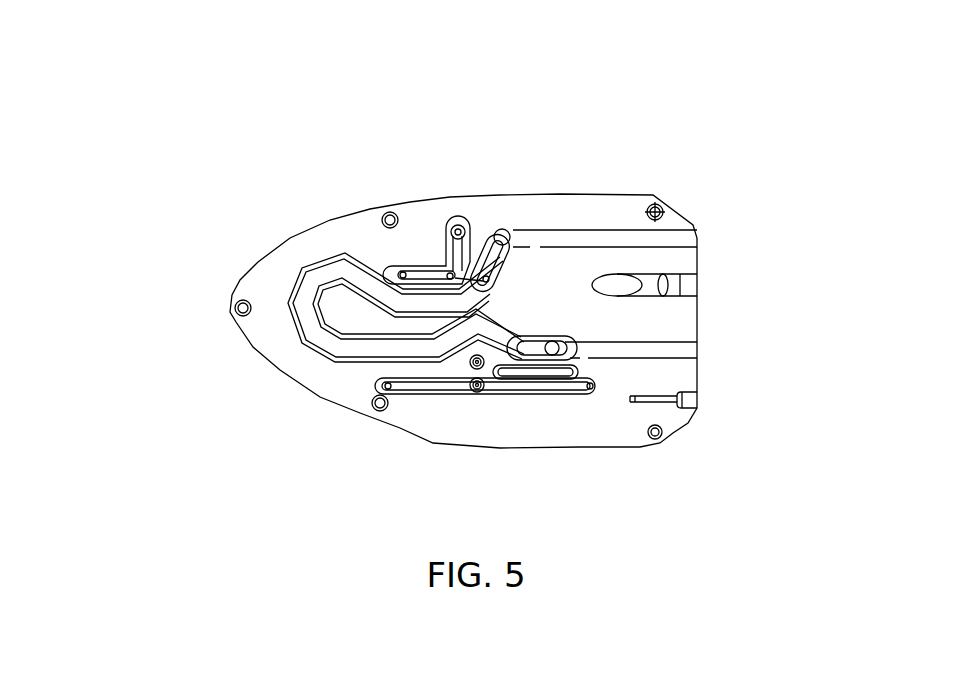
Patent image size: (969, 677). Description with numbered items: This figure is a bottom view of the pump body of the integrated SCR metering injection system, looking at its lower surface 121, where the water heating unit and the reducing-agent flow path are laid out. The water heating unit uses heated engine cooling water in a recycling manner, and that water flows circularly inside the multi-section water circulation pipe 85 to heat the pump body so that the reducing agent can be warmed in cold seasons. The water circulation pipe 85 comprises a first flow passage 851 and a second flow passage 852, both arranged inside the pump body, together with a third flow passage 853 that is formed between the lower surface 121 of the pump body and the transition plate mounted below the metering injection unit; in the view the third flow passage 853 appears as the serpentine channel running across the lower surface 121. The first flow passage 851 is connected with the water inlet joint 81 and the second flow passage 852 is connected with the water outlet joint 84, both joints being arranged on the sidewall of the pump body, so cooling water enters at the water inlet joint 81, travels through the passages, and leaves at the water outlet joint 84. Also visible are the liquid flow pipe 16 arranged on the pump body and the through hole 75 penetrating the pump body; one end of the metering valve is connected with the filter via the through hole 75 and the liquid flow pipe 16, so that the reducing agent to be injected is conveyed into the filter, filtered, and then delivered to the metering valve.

The liquid flow pipe 16 is at (553, 398).
The through hole 75 is at (376, 386).
The water inlet joint 81 is at (696, 240).
The water outlet joint 84 is at (695, 351).
The water circulation pipe 85 is at (364, 250).
The lower surface 121 is at (270, 290).
The first flow passage 851 is at (592, 240).
The second flow passage 852 is at (638, 350).
The third flow passage 853 is at (327, 272).